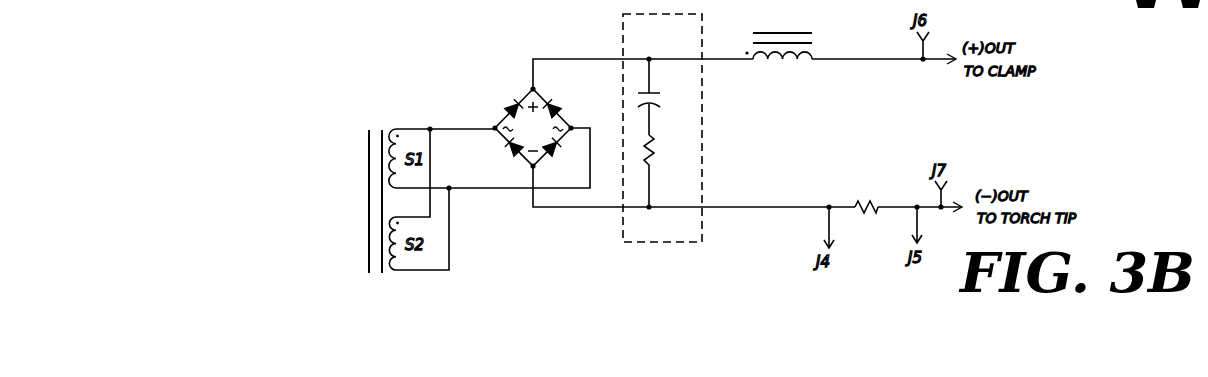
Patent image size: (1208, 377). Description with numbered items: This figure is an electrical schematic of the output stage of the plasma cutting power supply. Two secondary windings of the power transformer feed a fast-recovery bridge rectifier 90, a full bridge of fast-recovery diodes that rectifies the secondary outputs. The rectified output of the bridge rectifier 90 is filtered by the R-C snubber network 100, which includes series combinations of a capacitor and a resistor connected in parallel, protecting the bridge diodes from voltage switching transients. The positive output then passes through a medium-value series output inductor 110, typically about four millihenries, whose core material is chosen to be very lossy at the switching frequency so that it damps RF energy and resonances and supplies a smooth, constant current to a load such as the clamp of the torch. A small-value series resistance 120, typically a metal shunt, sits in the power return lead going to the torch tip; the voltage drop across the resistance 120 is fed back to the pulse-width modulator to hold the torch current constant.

The bridge rectifier 90 is at (504, 100).
The snubber network 100 is at (700, 112).
The series output inductor 110 is at (817, 46).
The series resistance 120 is at (860, 200).